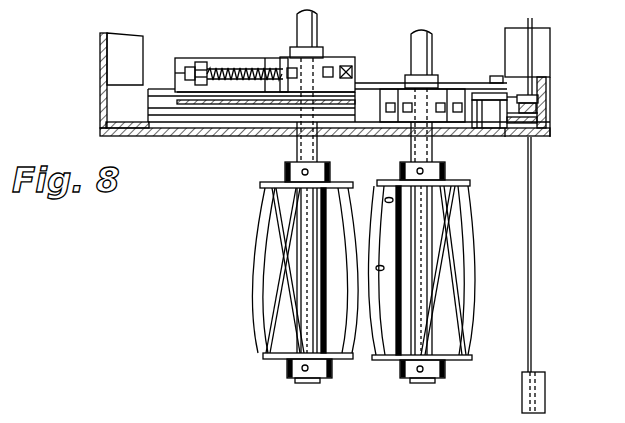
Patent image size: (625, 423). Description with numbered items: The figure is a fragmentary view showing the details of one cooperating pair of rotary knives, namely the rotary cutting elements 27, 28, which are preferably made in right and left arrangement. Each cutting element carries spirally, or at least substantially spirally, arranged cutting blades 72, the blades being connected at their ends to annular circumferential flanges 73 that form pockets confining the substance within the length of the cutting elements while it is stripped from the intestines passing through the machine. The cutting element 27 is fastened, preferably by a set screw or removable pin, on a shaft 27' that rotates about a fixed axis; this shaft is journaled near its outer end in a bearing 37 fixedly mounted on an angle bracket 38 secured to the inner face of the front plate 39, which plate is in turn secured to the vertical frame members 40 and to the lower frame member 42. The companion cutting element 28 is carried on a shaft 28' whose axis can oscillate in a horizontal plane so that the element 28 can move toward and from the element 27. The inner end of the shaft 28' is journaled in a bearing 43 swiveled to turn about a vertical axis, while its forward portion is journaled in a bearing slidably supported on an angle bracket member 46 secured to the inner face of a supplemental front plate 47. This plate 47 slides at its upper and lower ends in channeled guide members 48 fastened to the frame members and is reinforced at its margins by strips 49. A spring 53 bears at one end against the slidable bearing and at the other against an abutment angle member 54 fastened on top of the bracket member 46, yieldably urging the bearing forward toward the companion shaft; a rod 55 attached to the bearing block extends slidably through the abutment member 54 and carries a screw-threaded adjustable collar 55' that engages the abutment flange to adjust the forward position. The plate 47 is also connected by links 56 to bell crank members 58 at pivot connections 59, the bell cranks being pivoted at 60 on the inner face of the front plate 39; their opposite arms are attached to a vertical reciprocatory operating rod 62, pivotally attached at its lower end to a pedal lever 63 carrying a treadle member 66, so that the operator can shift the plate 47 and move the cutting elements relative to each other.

The rotary cutting element 27 is at (436, 285).
The shaft 27' is at (436, 96).
The rotary cutting element 28 is at (283, 294).
The shaft 28' is at (320, 86).
The bearing 37 is at (437, 97).
The angle bracket 38 is at (365, 98).
The front plate 39 is at (507, 131).
The vertical frame member 40 is at (107, 104).
The lower frame member 42 is at (167, 123).
The bearing 43 is at (323, 63).
The angle bracket member 46 is at (258, 62).
The supplemental front plate 47 is at (206, 107).
The channeled guide member 48 is at (170, 110).
The reinforcing strip 49 is at (243, 110).
The spring 53 is at (247, 65).
The angle member 54 is at (176, 78).
The rod 55 is at (196, 57).
The adjustable collar 55' is at (209, 47).
The link 56 is at (472, 88).
The bell crank member 58 is at (526, 95).
The link pivot connection 59 is at (497, 76).
The bell crank pivot 60 is at (487, 124).
The vertical reciprocatory operating rod 62 is at (540, 107).
The pedal lever 63 is at (533, 152).
The treadle member 66 is at (545, 393).
The cutting blade 72 is at (258, 317).
The annular circumferential flange 73 is at (282, 184).